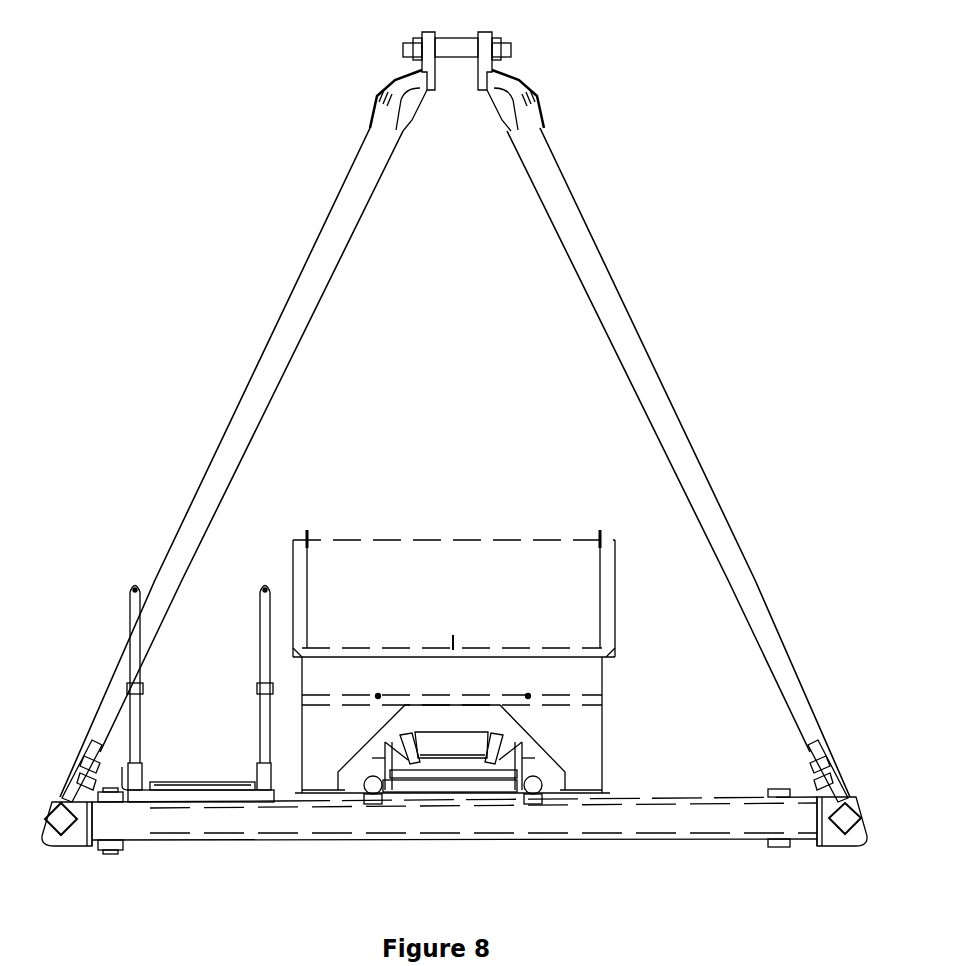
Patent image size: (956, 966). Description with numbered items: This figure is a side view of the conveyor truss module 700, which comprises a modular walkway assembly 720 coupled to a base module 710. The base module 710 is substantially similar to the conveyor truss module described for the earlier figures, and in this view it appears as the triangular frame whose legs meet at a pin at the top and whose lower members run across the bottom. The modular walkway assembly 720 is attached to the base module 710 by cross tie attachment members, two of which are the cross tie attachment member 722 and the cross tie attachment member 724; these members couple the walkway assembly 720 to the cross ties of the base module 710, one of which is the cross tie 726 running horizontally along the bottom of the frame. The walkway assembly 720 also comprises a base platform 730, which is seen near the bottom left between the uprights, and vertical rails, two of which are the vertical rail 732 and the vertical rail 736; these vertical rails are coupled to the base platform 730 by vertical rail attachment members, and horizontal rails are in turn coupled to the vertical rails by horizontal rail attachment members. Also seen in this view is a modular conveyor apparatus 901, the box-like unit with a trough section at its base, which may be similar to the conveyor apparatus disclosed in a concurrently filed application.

The conveyor truss module 700 is at (455, 417).
The base module 710 is at (265, 320).
The modular walkway assembly 720 is at (201, 690).
The cross tie attachment member 722 is at (271, 799).
The cross tie attachment member 724 is at (130, 804).
The cross tie 726 is at (720, 822).
The base platform 730 is at (207, 787).
The vertical rail 732 is at (129, 607).
The vertical rail 736 is at (260, 596).
The modular conveyor apparatus 901 is at (558, 532).